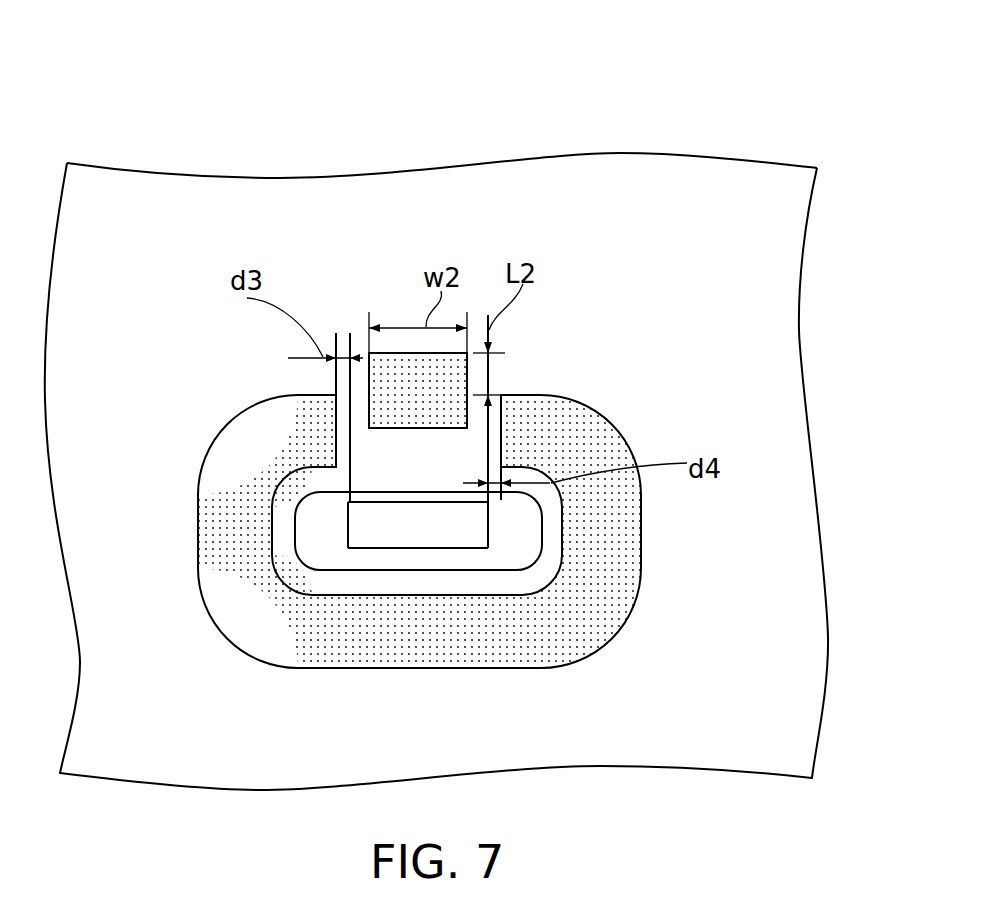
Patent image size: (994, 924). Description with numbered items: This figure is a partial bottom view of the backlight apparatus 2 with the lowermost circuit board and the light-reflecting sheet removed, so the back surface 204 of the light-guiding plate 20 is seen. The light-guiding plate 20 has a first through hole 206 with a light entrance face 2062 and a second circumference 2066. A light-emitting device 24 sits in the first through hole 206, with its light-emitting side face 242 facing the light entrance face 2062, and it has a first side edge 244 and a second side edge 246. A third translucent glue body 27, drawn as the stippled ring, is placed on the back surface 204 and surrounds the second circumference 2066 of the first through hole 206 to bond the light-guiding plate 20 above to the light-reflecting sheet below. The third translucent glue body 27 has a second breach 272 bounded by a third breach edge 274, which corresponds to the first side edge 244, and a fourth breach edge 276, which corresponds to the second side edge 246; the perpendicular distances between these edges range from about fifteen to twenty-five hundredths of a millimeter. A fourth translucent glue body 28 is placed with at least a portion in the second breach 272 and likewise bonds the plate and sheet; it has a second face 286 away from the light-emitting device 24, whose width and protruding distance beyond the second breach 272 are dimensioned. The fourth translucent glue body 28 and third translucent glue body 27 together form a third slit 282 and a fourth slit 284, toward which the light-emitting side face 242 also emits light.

The backlight apparatus 2 is at (446, 59).
The light-guiding plate 20 is at (436, 436).
The back surface 204 is at (765, 213).
The first through hole 206 is at (430, 541).
The light entrance face 2062 is at (417, 492).
The second circumference 2066 is at (317, 582).
The light-emitting device 24 is at (434, 613).
The light-emitting side face 242 is at (445, 502).
The first side edge 244 is at (348, 520).
The second side edge 246 is at (490, 522).
The third translucent glue body 27 is at (426, 544).
The second breach 272 is at (266, 517).
The third breach edge 274 is at (337, 437).
The fourth breach edge 276 is at (502, 428).
The fourth translucent glue body 28 is at (459, 343).
The third slit 282 is at (417, 458).
The fourth slit 284 is at (483, 427).
The second face 286 is at (401, 353).